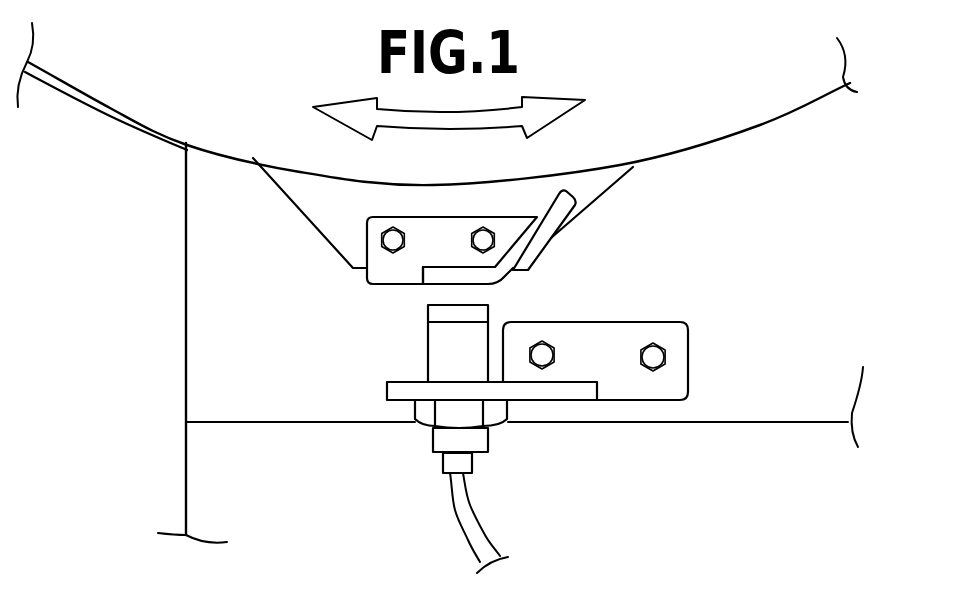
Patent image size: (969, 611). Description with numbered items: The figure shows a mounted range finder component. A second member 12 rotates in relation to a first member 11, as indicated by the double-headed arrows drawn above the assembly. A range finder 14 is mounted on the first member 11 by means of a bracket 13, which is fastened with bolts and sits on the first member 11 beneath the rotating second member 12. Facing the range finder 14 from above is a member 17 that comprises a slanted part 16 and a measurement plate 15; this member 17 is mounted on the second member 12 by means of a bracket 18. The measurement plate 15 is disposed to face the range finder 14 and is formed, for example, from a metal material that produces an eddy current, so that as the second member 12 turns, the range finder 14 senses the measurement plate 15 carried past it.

The first member 11 is at (195, 357).
The second member 12 is at (805, 95).
The bracket 13 is at (632, 390).
The range finder 14 is at (437, 350).
The measurement plate 15 is at (442, 277).
The slanted part 16 is at (549, 238).
The member 17 is at (448, 228).
The bracket 18 is at (323, 190).